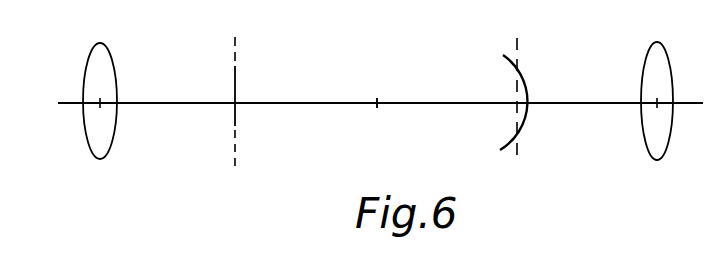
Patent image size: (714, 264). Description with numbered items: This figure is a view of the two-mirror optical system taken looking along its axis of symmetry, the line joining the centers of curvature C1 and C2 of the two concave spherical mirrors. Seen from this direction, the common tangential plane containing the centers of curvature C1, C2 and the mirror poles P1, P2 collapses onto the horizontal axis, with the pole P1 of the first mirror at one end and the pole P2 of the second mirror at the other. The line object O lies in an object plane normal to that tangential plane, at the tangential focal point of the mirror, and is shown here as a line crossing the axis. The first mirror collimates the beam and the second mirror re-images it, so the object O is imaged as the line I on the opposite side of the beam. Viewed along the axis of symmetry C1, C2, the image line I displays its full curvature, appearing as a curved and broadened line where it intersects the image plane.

The pole of mirror P1 is at (100, 101).
The pole of mirror P2 is at (657, 101).
The object O is at (235, 129).
The center of curvature C1 is at (382, 117).
The center of curvature C2 is at (382, 132).
The image I is at (522, 128).